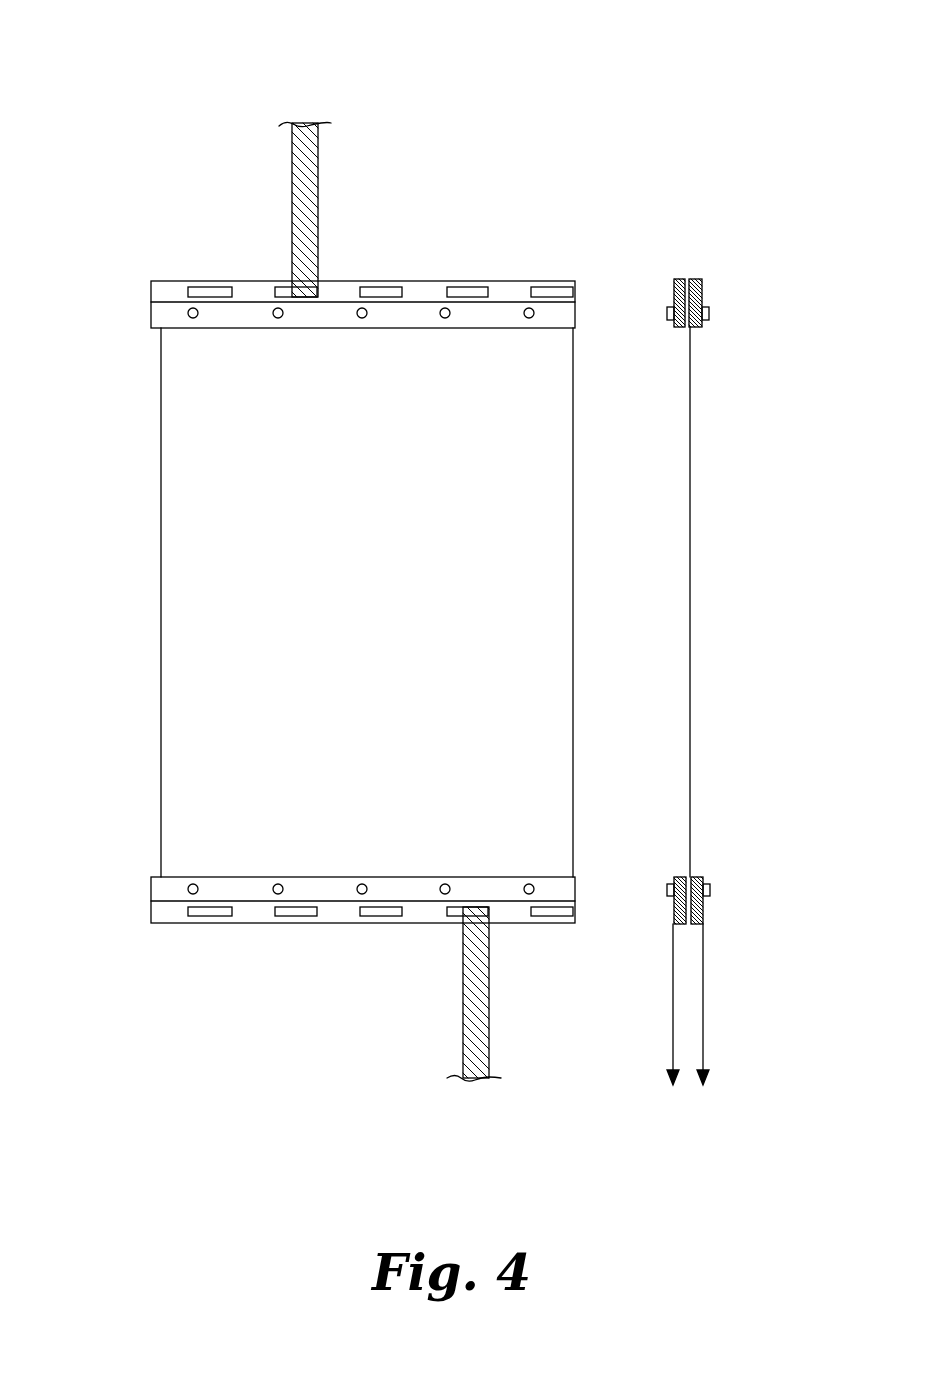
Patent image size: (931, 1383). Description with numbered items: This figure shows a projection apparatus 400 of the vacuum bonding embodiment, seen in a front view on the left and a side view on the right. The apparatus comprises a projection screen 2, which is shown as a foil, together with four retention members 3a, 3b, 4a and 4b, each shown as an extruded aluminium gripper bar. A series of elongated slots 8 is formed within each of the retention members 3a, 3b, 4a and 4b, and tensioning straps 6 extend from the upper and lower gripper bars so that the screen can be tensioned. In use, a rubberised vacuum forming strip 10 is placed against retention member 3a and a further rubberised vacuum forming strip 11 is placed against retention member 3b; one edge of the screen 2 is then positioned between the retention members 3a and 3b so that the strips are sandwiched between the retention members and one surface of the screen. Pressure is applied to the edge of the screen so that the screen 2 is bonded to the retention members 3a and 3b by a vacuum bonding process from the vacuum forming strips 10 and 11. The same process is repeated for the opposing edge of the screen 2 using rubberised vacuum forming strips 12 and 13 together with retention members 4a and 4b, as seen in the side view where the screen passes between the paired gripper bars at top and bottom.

The projection apparatus 400 is at (122, 90).
The projection screen 2 is at (160, 568).
The retention member 3a is at (577, 300).
The retention member 3b is at (698, 277).
The retention member 4a is at (557, 888).
The retention member 4b is at (695, 877).
The tensioning straps 6 is at (300, 195).
The elongated slots 8 is at (467, 288).
The rubberised vacuum forming strip 10 is at (677, 328).
The rubberised vacuum forming strip 11 is at (698, 328).
The rubberised vacuum forming strip 12 is at (674, 909).
The rubberised vacuum forming strip 13 is at (703, 909).